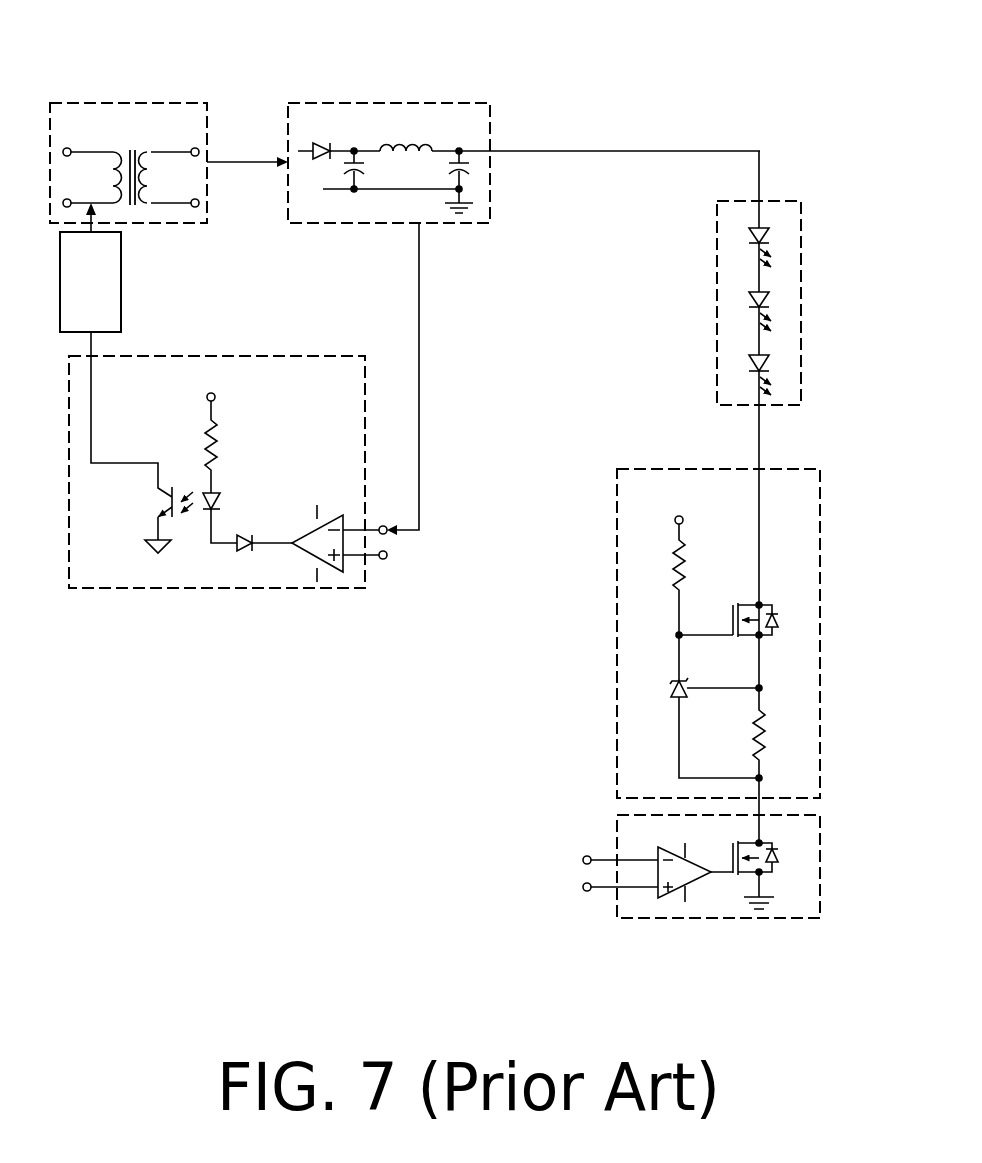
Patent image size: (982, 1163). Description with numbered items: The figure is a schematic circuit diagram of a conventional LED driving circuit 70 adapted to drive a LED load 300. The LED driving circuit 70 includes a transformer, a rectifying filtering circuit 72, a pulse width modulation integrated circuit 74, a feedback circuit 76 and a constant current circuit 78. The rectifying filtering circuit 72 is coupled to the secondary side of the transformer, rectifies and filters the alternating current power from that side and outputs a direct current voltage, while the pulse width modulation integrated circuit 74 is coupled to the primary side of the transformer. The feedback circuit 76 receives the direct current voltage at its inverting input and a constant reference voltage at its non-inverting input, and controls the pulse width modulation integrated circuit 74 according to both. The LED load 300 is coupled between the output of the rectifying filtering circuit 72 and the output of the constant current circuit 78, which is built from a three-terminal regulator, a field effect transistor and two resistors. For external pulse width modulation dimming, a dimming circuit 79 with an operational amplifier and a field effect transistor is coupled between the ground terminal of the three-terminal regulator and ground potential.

The LED driving circuit 70 is at (456, 498).
The rectifying filtering circuit 72 is at (357, 224).
The pulse width modulation integrated circuit 74 is at (121, 268).
The feedback circuit 76 is at (271, 356).
The constant current circuit 78 is at (648, 468).
The dimming circuit 79 is at (763, 919).
The LED load 300 is at (801, 322).